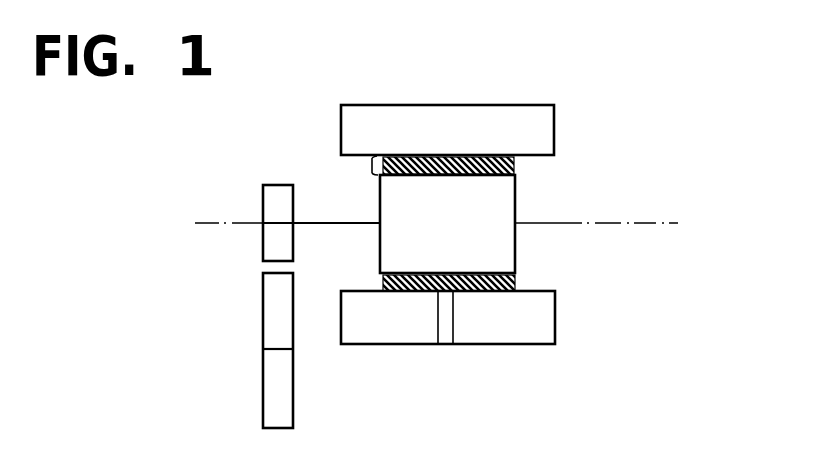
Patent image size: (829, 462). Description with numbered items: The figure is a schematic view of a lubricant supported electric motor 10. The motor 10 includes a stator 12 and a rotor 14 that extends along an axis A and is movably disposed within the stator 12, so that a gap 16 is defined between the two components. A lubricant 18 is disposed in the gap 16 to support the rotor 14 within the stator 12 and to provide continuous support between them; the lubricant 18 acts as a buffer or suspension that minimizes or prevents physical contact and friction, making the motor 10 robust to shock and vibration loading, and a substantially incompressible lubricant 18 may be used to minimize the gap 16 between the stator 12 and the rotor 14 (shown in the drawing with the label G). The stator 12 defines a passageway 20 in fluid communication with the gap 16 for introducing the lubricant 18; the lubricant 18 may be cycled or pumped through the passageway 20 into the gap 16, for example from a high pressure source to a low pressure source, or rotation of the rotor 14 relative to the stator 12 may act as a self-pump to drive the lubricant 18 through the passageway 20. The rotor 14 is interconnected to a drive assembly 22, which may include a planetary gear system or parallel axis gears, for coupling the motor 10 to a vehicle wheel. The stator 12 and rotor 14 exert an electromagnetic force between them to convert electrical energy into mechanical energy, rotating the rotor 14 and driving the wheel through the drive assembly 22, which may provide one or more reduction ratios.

The lubricant supported electric motor 10 is at (638, 58).
The stator 12 is at (518, 105).
The rotor 14 is at (516, 202).
The gap 16 is at (528, 283).
The lubricant 18 is at (516, 170).
The passageway 20 is at (440, 330).
The drive assembly 22 is at (263, 332).
The axis A is at (212, 223).
The gap G is at (371, 165).